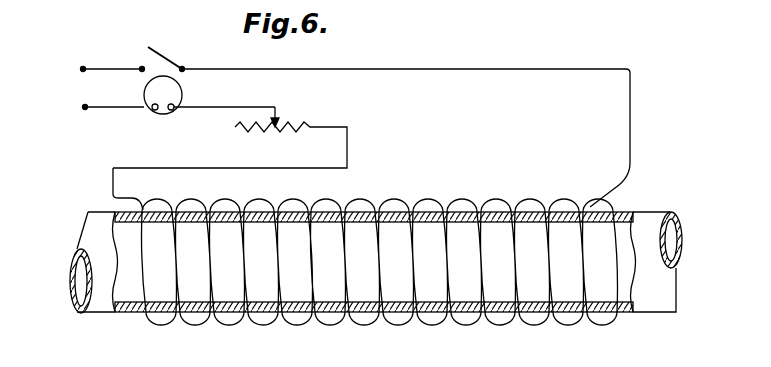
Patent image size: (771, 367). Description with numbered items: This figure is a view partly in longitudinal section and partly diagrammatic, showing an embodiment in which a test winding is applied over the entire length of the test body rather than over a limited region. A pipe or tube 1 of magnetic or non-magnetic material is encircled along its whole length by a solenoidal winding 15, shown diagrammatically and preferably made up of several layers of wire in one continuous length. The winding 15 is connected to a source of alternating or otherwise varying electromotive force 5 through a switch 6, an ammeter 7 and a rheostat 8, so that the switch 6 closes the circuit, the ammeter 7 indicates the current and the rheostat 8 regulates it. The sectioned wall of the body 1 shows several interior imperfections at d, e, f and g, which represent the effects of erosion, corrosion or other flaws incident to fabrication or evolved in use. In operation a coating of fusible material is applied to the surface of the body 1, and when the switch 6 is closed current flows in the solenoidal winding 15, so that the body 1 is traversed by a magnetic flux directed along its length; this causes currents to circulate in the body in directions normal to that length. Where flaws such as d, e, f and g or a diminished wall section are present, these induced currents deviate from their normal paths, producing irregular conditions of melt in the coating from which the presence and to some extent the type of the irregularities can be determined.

The pipe or tube 1 is at (663, 212).
The source of alternating or otherwise varying electromotive force 5 is at (88, 100).
The switch 6 is at (170, 63).
The ammeter 7 is at (152, 111).
The rheostat 8 is at (290, 126).
The solenoidal winding 15 is at (425, 200).
The interior imperfection d is at (198, 224).
The interior imperfection e is at (291, 224).
The interior imperfection f is at (376, 224).
The interior imperfection g is at (503, 224).